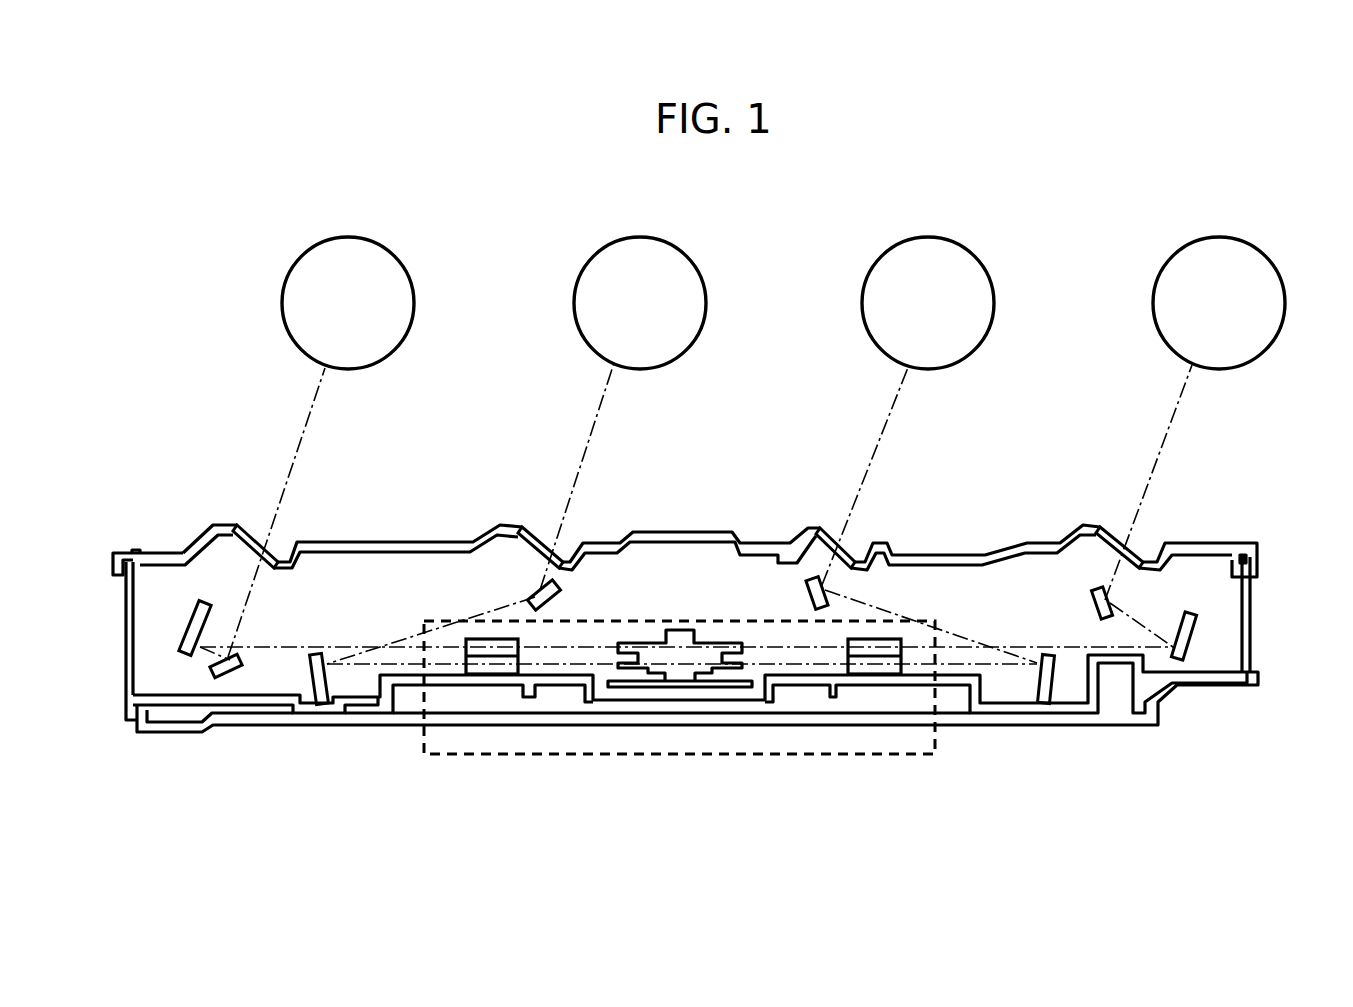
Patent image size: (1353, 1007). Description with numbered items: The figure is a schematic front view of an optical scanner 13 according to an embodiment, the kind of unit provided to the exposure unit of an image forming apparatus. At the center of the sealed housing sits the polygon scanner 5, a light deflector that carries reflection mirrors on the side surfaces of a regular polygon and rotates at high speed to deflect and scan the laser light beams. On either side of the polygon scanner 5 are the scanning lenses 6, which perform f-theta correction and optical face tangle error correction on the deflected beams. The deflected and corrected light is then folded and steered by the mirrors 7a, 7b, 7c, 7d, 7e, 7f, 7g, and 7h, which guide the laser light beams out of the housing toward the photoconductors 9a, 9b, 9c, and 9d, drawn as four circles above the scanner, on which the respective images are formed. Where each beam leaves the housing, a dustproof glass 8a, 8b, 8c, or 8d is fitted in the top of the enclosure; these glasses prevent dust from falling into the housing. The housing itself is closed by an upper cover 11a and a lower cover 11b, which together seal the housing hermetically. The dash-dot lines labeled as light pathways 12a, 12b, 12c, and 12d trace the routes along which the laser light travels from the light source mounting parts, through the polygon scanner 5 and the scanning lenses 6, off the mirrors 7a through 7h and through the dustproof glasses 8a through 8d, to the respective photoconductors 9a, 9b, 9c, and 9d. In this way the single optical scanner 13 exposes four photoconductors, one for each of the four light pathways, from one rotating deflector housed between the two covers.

The polygon scanner 5 is at (690, 626).
The scanning lens 6 is at (467, 642).
The mirror 7a is at (1193, 612).
The mirror 7b is at (1037, 681).
The mirror 7c is at (310, 678).
The mirror 7d is at (204, 605).
The mirror 7e is at (1094, 607).
The mirror 7f is at (807, 598).
The mirror 7g is at (560, 602).
The mirror 7h is at (214, 671).
The dustproof glass 8a is at (1113, 525).
The dustproof glass 8b is at (828, 525).
The dustproof glass 8c is at (535, 523).
The dustproof glass 8d is at (248, 523).
The photoconductor 9a is at (1220, 238).
The photoconductor 9b is at (929, 238).
The photoconductor 9c is at (639, 238).
The photoconductor 9d is at (351, 238).
The upper cover 11a is at (1257, 560).
The lower cover 11b is at (1114, 727).
The light pathway 12a is at (1164, 438).
The light pathway 12b is at (878, 442).
The light pathway 12c is at (583, 438).
The light pathway 12d is at (299, 438).
The optical scanner 13 is at (935, 754).